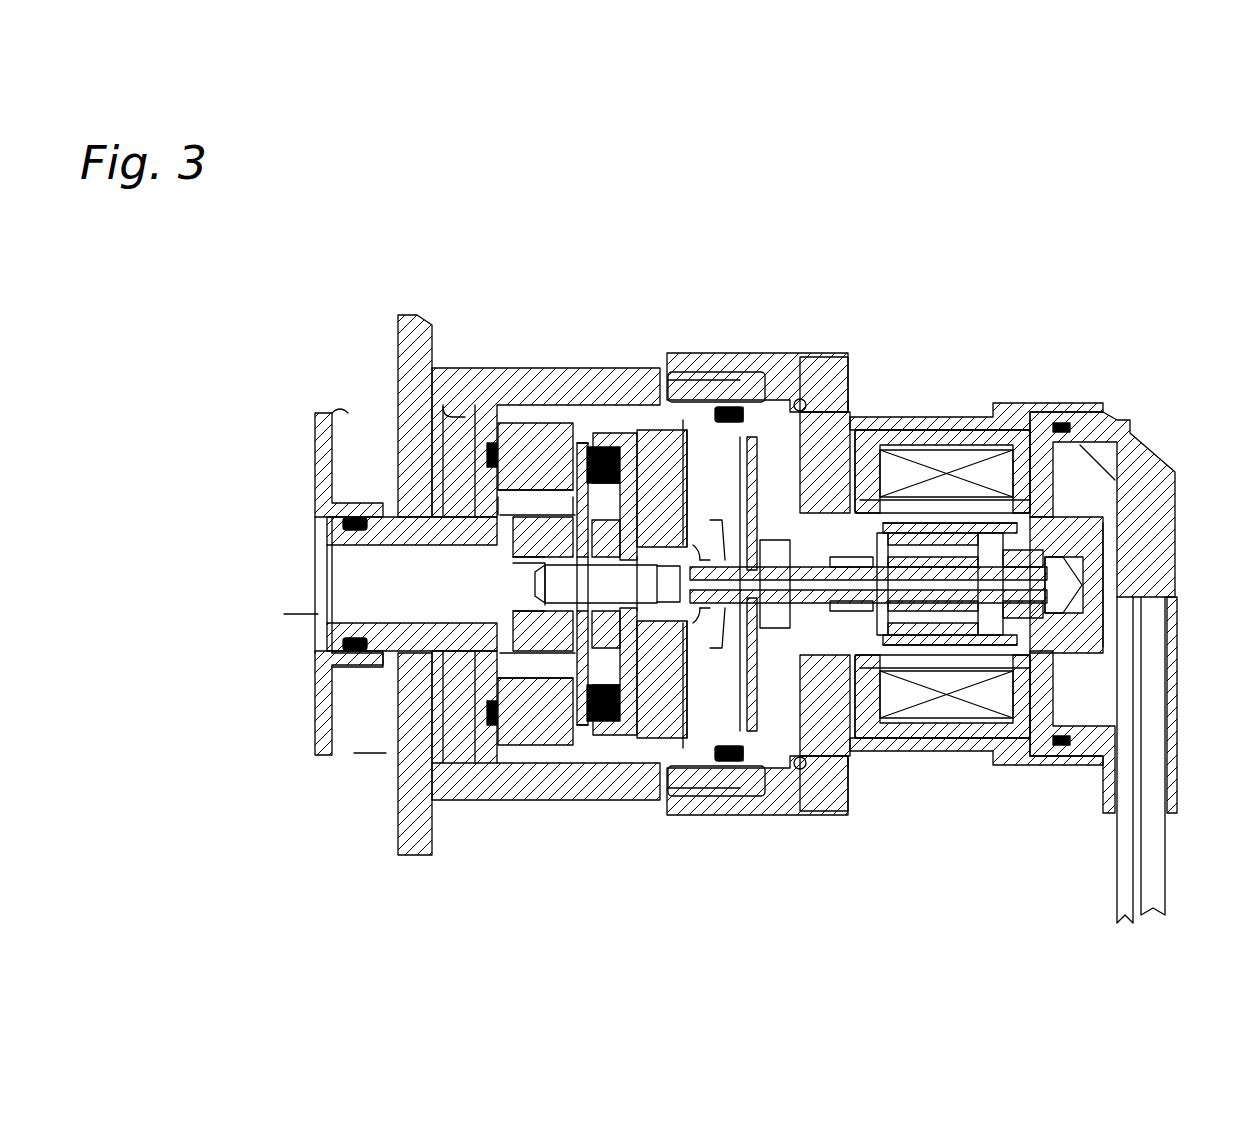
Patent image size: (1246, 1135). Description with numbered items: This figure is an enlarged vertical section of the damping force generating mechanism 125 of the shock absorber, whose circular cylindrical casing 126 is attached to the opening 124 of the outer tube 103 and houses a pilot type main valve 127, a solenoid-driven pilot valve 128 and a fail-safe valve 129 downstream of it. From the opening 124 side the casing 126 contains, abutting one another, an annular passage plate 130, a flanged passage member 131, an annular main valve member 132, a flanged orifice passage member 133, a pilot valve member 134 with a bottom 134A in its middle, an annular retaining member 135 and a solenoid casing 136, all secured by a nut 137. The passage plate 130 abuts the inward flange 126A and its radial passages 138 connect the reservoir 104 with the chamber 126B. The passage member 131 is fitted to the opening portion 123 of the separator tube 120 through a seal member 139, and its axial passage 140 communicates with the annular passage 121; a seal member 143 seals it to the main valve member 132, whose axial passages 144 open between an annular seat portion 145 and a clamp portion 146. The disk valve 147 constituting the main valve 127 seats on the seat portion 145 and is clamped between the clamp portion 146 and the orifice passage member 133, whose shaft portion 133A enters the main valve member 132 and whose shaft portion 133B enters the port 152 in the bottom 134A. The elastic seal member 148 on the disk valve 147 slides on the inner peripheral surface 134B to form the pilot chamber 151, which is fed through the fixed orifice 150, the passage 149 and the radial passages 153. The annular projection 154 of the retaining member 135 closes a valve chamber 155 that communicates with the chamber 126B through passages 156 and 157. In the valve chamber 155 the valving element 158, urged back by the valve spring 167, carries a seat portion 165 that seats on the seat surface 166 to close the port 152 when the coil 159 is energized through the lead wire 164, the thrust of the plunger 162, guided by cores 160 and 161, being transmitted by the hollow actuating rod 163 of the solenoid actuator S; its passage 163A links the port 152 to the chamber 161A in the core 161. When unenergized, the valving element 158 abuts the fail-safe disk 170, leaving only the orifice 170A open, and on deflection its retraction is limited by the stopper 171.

The outer tube 103 is at (412, 345).
The reservoir 104 is at (371, 743).
The separator tube 120 is at (318, 440).
The annular passage 121 is at (301, 604).
The opening portion 123 is at (340, 646).
The opening 124 is at (395, 490).
The damping force generating mechanism 125 is at (931, 296).
The casing 126 is at (515, 390).
The inward flange 126A is at (440, 745).
The chamber 126B is at (490, 392).
The main valve 127 is at (578, 430).
The pilot valve 128 is at (700, 420).
The fail-safe valve 129 is at (772, 375).
The passage plate 130 is at (470, 745).
The passage member 131 is at (340, 533).
The main valve member 132 is at (535, 735).
The orifice passage member 133 is at (620, 705).
The small-diameter shaft portion 133A is at (545, 440).
The small-diameter shaft portion 133B is at (625, 440).
The pilot valve member 134 is at (672, 620).
The bottom 134A is at (686, 750).
The inner peripheral surface 134B is at (655, 740).
The retaining member 135 is at (820, 770).
The solenoid casing 136 is at (1012, 765).
The nut 137 is at (835, 815).
The passages 138 is at (462, 395).
The seal member 139 is at (350, 660).
The passage 140 is at (348, 556).
The seal member 143 is at (508, 750).
The passages 144 is at (500, 760).
The seat portion 145 is at (558, 760).
The clamp portion 146 is at (535, 700).
The disk valve 147 is at (600, 440).
The elastic seal member 148 is at (618, 440).
The passage 149 is at (548, 578).
The fixed orifice 150 is at (545, 600).
The pilot chamber 151 is at (585, 750).
The port 152 is at (660, 720).
The passages 153 is at (618, 430).
The annular projection 154 is at (785, 710).
The valve chamber 155 is at (745, 730).
The passage 156 is at (805, 775).
The passage 157 is at (683, 410).
The valving element 158 is at (735, 405).
The coil 159 is at (962, 445).
The core 160 is at (908, 430).
The core 161 is at (1075, 412).
The chamber 161A is at (1063, 598).
The plunger 162 is at (955, 660).
The actuating rod 163 is at (1110, 523).
The passage 163A is at (1065, 580).
The lead wire 164 is at (1150, 845).
The seat portion 165 is at (650, 420).
The seat surface 166 is at (720, 720).
The valve spring 167 is at (705, 740).
The fail-safe disk 170 is at (785, 395).
The orifice 170A is at (750, 420).
The stopper 171 is at (850, 400).
The solenoid actuator S is at (1010, 415).